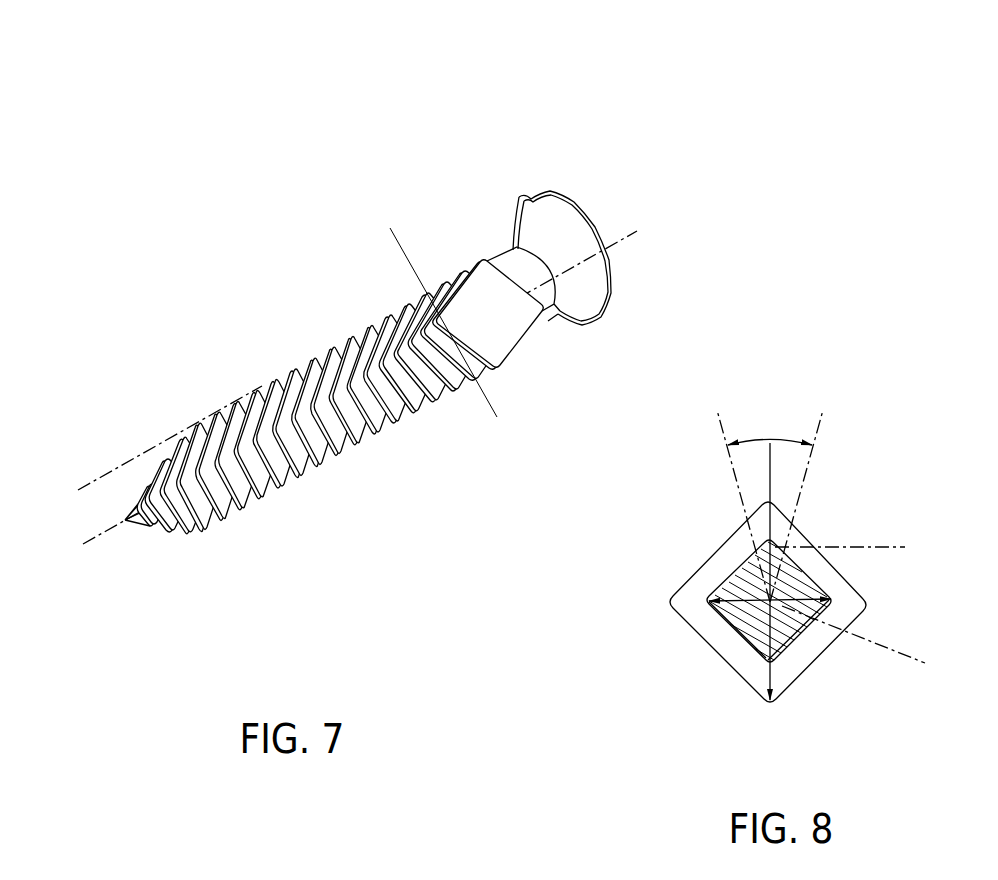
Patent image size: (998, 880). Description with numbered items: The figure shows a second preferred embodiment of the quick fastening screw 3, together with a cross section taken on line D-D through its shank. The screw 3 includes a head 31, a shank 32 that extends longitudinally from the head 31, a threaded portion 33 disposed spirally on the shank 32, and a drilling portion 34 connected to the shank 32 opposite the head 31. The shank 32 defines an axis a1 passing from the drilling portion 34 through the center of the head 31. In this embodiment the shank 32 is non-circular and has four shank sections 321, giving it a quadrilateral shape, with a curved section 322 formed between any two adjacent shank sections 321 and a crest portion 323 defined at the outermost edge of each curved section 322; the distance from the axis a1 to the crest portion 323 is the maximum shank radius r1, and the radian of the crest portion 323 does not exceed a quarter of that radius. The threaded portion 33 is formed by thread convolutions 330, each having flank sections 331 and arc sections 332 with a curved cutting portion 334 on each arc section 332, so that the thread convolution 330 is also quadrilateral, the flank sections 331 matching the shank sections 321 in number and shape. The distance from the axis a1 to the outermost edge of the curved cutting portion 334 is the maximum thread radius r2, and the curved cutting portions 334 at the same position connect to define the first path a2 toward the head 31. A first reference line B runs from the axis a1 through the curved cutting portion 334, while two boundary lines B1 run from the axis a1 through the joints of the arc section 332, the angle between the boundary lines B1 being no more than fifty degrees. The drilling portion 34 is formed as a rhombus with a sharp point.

In FIG. 7, the quick fastening screw 3 is at (394, 355).
In FIG. 7, the head 31 is at (618, 278).
In FIG. 7, the shank 32 is at (405, 408).
In FIG. 8, the shank 32 is at (840, 595).
In FIG. 7, the shank section 321 is at (222, 487).
In FIG. 8, the shank section 321 is at (762, 612).
In FIG. 8, the curved section 322 is at (762, 538).
In FIG. 8, the crest portion 323 is at (786, 543).
In FIG. 7, the threaded portion 33 is at (310, 352).
In FIG. 8, the threaded portion 33 is at (683, 638).
In FIG. 7, the thread convolution 330 is at (282, 368).
In FIG. 8, the thread convolution 330 is at (704, 661).
In FIG. 7, the flank section 331 is at (243, 418).
In FIG. 8, the flank section 331 is at (702, 567).
In FIG. 8, the arc section 332 is at (778, 500).
In FIG. 8, the curved cutting portion 334 is at (795, 522).
In FIG. 7, the drilling portion 34 is at (136, 528).
In FIG. 7, the axis a1 is at (345, 399).
In FIG. 8, the axis a1 is at (867, 645).
In FIG. 7, the first path a2 is at (153, 446).
In FIG. 8, the maximum shank radius r1 is at (666, 606).
In FIG. 8, the maximum thread radius r2 is at (797, 680).
In FIG. 8, the first reference line B is at (853, 552).
In FIG. 8, the boundary line B1 is at (773, 491).
In FIG. 7, the section line D is at (405, 242).